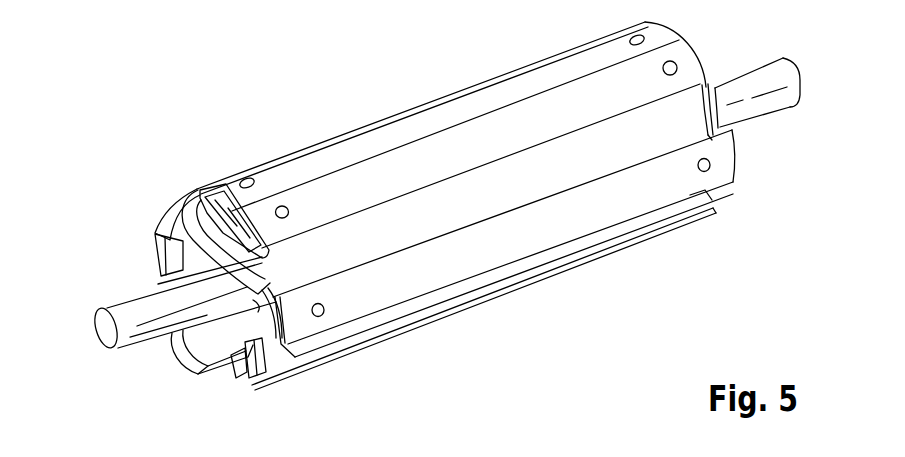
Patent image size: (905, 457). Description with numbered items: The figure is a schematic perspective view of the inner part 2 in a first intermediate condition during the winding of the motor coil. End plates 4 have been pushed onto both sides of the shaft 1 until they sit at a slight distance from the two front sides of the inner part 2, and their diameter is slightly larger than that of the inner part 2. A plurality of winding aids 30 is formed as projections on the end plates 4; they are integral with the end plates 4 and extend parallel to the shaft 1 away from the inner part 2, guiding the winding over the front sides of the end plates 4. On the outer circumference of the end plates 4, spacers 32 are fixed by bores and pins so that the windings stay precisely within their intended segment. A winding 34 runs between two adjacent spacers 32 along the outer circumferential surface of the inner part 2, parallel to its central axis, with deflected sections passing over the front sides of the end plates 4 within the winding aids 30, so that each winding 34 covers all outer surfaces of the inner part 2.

The shaft 1 is at (103, 333).
The inner part 2 is at (610, 230).
The end plates 4 is at (196, 356).
The winding aids 30 is at (238, 225).
The spacers 32 is at (458, 157).
The winding 34 is at (553, 160).